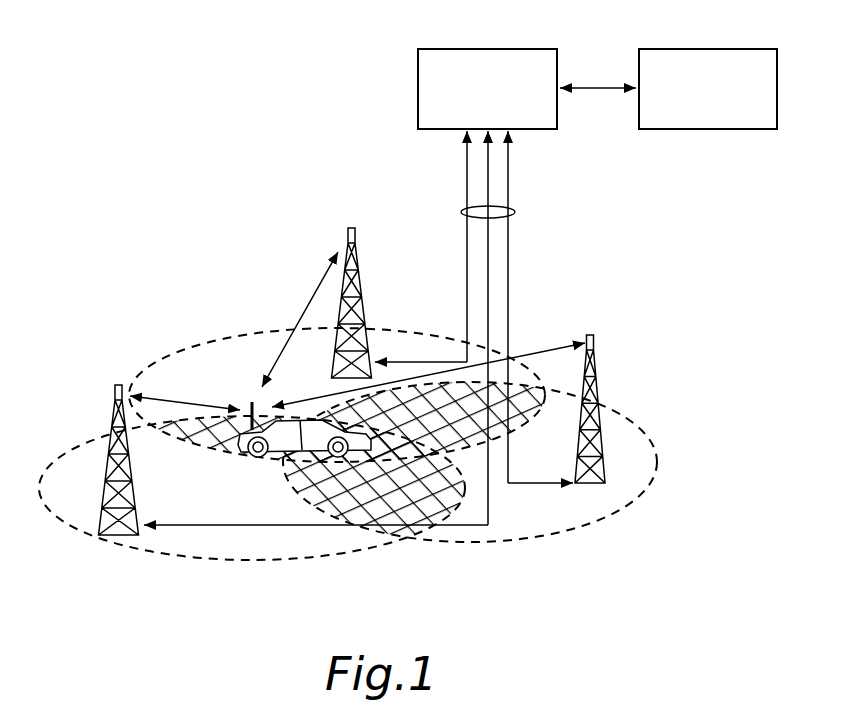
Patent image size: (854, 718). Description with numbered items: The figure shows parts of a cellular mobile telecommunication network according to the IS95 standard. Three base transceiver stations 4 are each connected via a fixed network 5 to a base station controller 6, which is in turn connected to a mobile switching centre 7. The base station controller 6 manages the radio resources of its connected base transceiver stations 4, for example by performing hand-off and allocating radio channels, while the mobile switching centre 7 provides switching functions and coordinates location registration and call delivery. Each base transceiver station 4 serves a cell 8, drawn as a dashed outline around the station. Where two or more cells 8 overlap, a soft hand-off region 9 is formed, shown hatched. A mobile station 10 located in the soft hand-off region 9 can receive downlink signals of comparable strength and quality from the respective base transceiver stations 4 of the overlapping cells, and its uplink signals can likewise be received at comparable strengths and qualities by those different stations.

The base transceiver station 4 is at (357, 276).
The fixed network 5 is at (515, 212).
The base station controller 6 is at (527, 49).
The mobile switching centre 7 is at (700, 49).
The cell 8 is at (226, 339).
The soft hand-off region 9 is at (387, 498).
The mobile station 10 is at (320, 444).